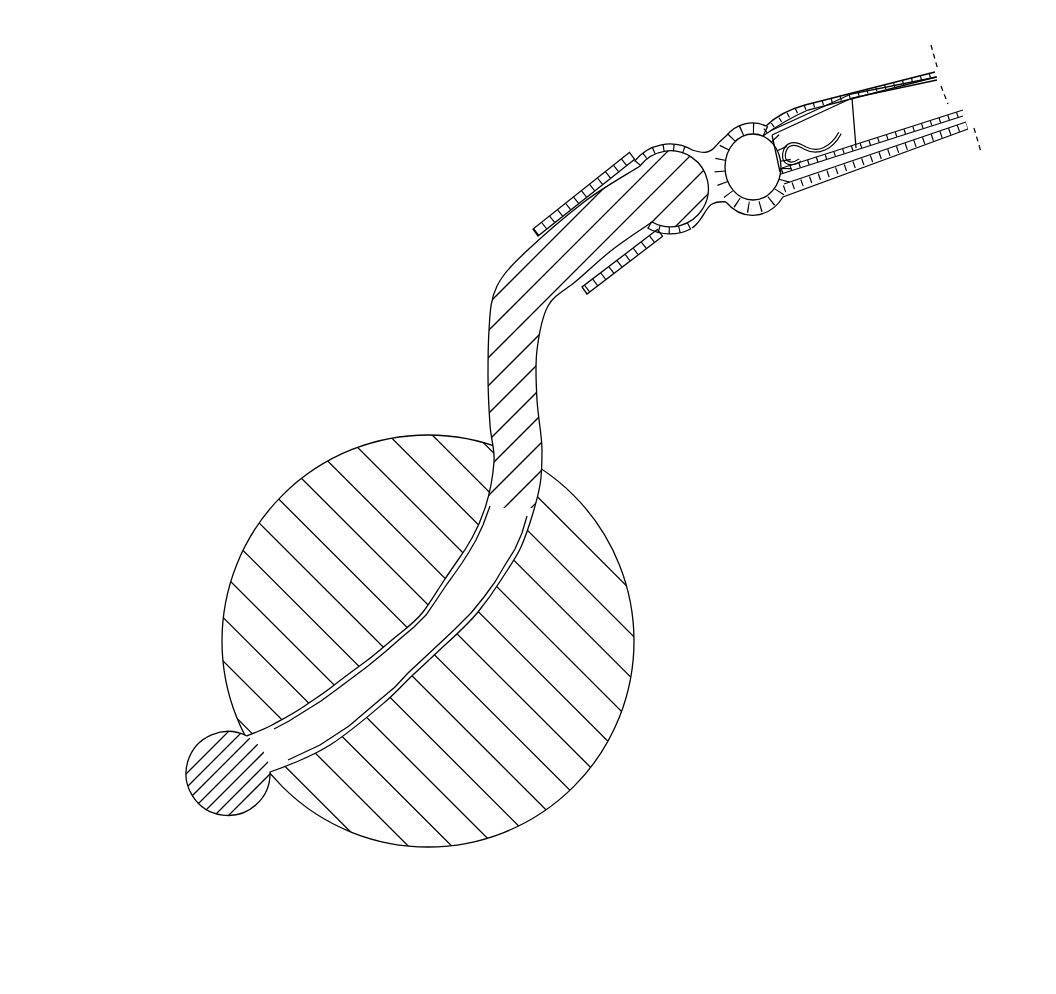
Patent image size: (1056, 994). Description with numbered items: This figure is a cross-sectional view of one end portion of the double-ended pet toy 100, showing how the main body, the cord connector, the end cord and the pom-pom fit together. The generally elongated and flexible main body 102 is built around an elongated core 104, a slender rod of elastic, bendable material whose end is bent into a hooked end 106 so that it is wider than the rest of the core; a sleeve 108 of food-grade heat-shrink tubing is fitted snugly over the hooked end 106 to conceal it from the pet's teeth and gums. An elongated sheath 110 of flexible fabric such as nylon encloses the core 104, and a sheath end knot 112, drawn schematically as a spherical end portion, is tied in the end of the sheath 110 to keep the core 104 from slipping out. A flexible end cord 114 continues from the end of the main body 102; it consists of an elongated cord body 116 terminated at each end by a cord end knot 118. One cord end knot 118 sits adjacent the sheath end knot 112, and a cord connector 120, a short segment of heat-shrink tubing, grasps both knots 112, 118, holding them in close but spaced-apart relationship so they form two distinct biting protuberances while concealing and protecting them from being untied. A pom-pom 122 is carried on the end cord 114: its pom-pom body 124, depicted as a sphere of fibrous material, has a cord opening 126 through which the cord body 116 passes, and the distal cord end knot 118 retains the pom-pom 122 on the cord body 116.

The double-ended pet toy 100 is at (330, 106).
The main body 102 is at (874, 94).
The elongated core 104 is at (930, 120).
The hooked end 106 is at (767, 160).
The sleeve 108 is at (855, 128).
The elongated sheath 110 is at (906, 82).
The sheath end knot 112 is at (713, 207).
The end cord 114 is at (485, 317).
The cord body 116 is at (527, 393).
The cord end knot 118 is at (205, 750).
The cord connector 120 is at (672, 142).
The pom-pom 122 is at (312, 468).
The pom-pom body 124 is at (613, 600).
The cord opening 126 is at (533, 498).